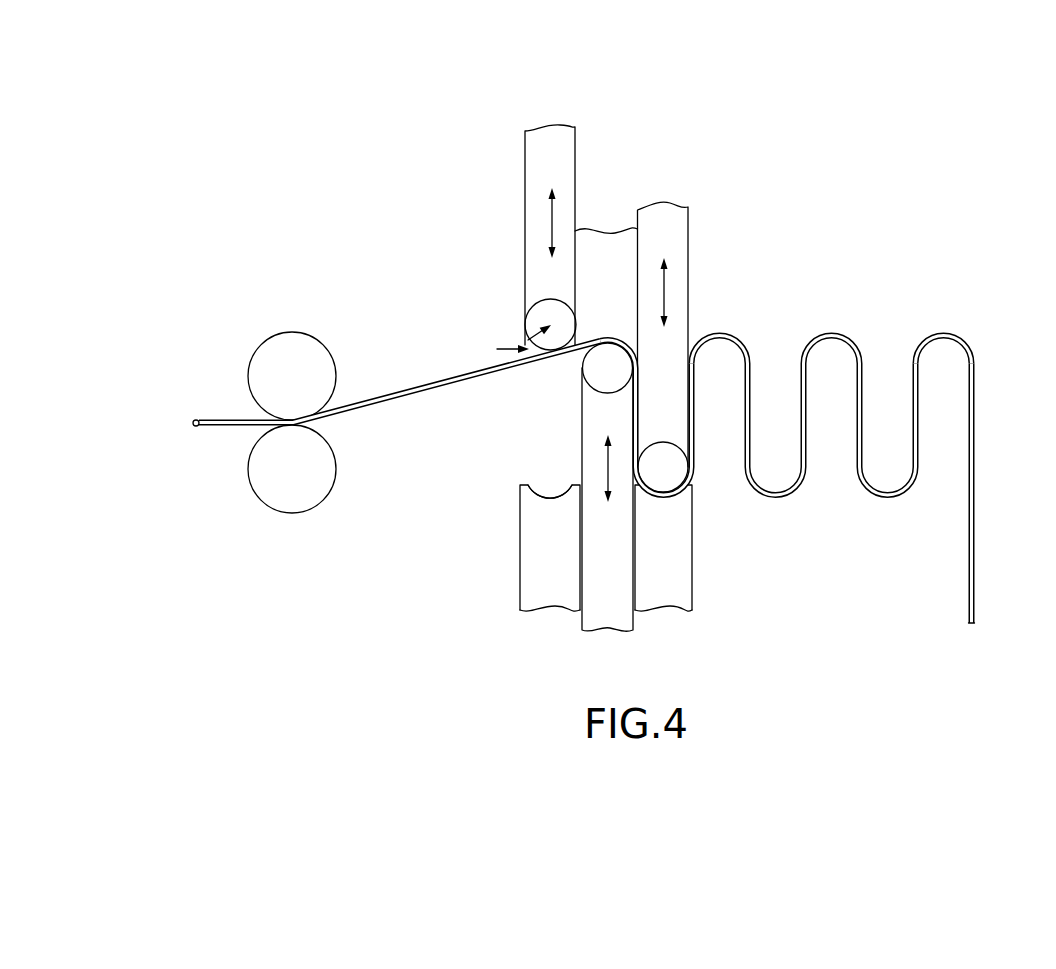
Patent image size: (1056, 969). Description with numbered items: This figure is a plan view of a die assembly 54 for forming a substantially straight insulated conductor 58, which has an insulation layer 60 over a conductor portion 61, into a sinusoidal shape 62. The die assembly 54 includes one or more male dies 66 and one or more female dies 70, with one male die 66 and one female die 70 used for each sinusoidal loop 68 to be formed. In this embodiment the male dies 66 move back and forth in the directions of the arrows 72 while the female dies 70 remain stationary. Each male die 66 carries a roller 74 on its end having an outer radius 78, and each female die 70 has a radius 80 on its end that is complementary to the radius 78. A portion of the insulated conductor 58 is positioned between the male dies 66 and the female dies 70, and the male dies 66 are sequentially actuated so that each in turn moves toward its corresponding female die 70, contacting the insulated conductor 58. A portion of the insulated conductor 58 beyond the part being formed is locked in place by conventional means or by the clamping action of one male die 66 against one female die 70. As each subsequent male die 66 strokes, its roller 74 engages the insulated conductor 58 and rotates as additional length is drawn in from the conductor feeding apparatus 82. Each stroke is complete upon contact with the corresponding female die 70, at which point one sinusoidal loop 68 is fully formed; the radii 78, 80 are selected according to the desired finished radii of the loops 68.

The die assembly 54 is at (757, 132).
The insulated conductor 58 is at (816, 423).
The insulation layer 60 is at (374, 419).
The conductor portion 61 is at (197, 420).
The sinusoidal shape 62 is at (865, 322).
The male dies 66 is at (533, 213).
The sinusoidal loop 68 is at (957, 338).
The female dies 70 is at (605, 243).
The arrows 72 is at (552, 228).
The roller 74 is at (536, 311).
The outer radius 78 is at (528, 342).
The radius 80 is at (553, 495).
The conductor feeding apparatus 82 is at (235, 398).